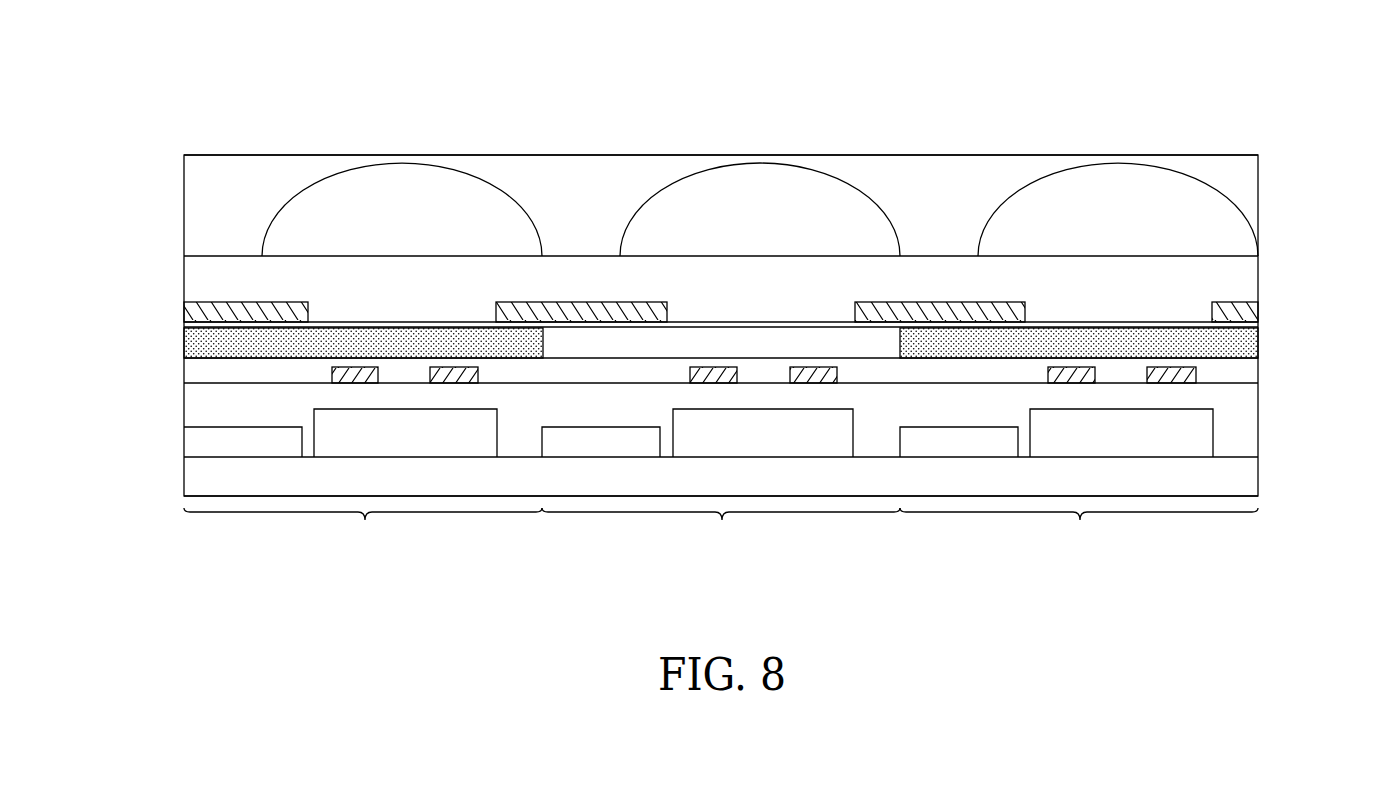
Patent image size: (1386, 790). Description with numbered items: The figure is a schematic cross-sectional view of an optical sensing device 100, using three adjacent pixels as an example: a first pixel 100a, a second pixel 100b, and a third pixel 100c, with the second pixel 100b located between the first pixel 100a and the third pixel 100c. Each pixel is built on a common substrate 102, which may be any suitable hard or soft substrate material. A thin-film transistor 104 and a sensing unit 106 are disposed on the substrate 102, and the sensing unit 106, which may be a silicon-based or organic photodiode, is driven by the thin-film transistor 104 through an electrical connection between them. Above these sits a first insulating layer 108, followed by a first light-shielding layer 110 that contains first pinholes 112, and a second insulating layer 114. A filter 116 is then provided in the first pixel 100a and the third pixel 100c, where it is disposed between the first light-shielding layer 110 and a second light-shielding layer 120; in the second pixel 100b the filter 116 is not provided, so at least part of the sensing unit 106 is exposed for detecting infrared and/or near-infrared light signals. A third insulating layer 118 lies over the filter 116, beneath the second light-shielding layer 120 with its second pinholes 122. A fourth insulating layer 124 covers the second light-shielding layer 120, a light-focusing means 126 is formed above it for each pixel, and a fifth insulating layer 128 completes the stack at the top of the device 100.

The optical sensing device 100 is at (105, 82).
The first pixel 100a is at (363, 534).
The second pixel 100b is at (721, 534).
The third pixel 100c is at (1079, 534).
The substrate 102 is at (1255, 480).
The thin-film transistor 104 is at (213, 437).
The sensing unit 106 is at (383, 447).
The first insulating layer 108 is at (1255, 440).
The first light-shielding layer 110 is at (1195, 373).
The first pinholes 112 is at (1122, 370).
The second insulating layer 114 is at (1255, 370).
The filter 116 is at (1255, 345).
The third insulating layer 118 is at (1255, 323).
The second light-shielding layer 120 is at (1235, 307).
The second pinholes 122 is at (1087, 304).
The fourth insulating layer 124 is at (1250, 268).
The light-focusing means 126 is at (1232, 223).
The fifth insulating layer 128 is at (1255, 178).